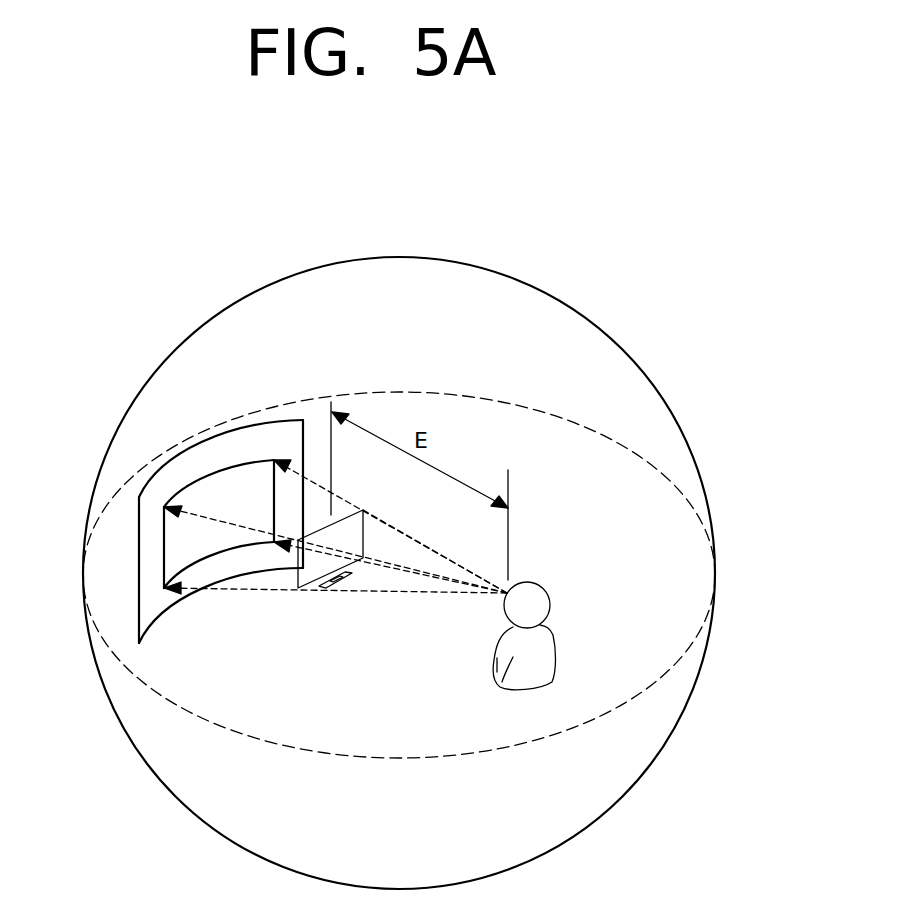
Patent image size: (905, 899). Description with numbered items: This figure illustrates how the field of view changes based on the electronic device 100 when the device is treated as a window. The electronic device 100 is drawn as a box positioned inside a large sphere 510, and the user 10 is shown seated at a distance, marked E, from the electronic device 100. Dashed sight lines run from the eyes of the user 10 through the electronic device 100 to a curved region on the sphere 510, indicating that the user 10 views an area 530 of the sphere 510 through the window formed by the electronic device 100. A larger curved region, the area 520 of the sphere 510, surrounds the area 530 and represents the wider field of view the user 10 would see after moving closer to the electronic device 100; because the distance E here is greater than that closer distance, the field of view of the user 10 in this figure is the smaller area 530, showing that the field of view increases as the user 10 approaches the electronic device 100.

The sphere 510 is at (517, 282).
The area of the sphere 520 is at (157, 470).
The area of the sphere 530 is at (218, 473).
The electronic device 100 is at (297, 590).
The user 10 is at (555, 643).